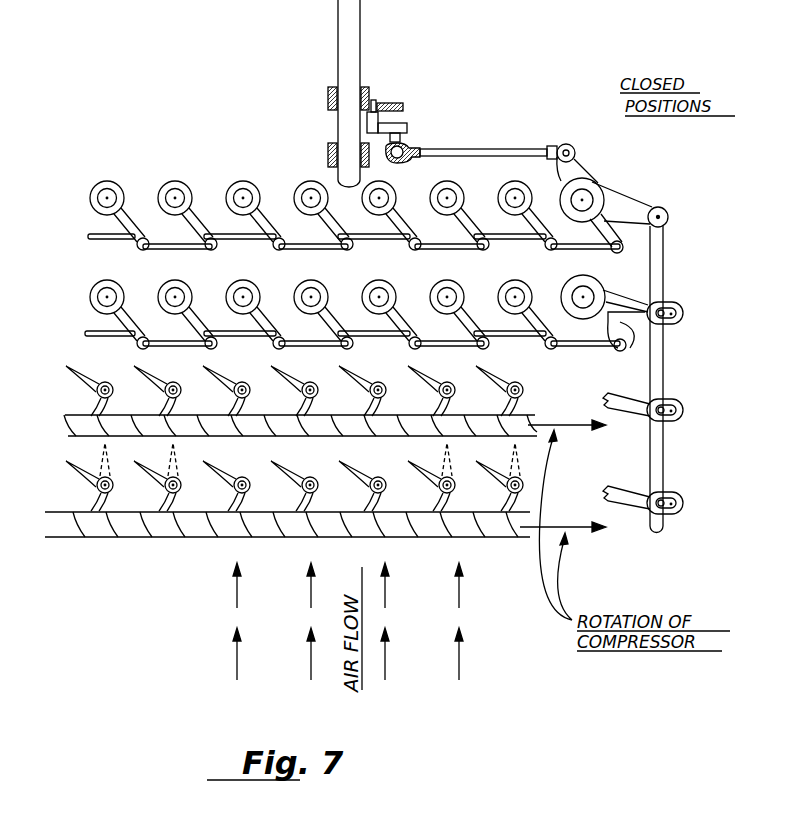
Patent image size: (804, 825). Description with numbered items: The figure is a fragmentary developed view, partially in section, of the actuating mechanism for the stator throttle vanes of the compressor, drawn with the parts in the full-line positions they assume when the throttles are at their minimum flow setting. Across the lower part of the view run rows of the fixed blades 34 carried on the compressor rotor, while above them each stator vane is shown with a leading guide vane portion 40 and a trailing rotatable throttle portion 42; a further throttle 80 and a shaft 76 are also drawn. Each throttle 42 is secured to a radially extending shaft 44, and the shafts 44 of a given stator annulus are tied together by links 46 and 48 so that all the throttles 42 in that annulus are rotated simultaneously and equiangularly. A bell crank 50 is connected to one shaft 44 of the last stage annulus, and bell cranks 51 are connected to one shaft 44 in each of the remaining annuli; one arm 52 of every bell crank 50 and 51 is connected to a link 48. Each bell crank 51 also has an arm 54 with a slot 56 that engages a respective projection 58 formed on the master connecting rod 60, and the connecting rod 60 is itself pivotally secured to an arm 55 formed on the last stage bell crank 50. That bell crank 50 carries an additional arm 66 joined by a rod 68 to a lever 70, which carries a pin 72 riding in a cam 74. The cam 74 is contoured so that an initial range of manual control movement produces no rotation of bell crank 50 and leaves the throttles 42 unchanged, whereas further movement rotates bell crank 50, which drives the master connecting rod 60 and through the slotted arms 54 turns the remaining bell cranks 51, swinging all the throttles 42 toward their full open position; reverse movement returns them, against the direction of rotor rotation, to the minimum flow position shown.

The fixed blades 34 is at (72, 420).
The leading guide vane portion 40 is at (102, 407).
The trailing rotatable throttle portion 42 is at (80, 378).
The radially extending shafts 44 is at (175, 192).
The links 46 is at (118, 220).
The links 48 is at (241, 239).
The bell crank 50 is at (616, 194).
The bell cranks 51 is at (612, 290).
The arm 52 is at (620, 236).
The arm 54 is at (630, 305).
The arm 55 is at (628, 204).
The slot 56 is at (683, 313).
The projections 58 is at (660, 410).
The master connecting rod 60 is at (665, 452).
The additional arm 66 is at (576, 152).
The rod 68 is at (505, 150).
The lever 70 is at (405, 128).
The pin 72 is at (377, 100).
The cam 74 is at (398, 105).
The shaft 76 is at (352, 28).
The vane 80 is at (405, 503).